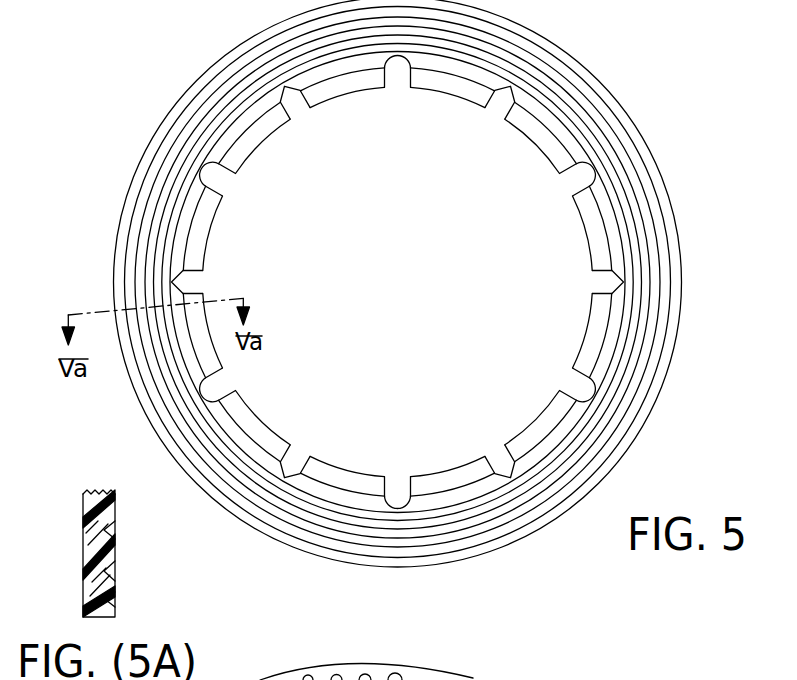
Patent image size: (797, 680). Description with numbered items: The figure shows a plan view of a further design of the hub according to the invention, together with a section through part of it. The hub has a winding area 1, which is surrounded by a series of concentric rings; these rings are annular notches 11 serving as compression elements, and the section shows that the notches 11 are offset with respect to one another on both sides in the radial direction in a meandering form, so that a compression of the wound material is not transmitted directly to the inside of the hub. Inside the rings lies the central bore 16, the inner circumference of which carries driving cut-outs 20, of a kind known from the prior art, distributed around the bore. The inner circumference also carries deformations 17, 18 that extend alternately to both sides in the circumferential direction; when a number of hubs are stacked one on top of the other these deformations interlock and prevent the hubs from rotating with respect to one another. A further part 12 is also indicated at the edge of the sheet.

In FIG. 5, the winding area 1 is at (434, 283).
In FIG. 5, the annular notches 11 is at (640, 390).
In FIG. 5A, the annular notches 11 is at (83, 578).
In FIG. 5, the partial element of adjacent figure 12 is at (455, 679).
In FIG. 5, the central bore 16 is at (518, 253).
In FIG. 5, the deformations 17 is at (541, 423).
In FIG. 5, the deformations 18 is at (422, 478).
In FIG. 5, the driving cut-outs 20 is at (226, 170).